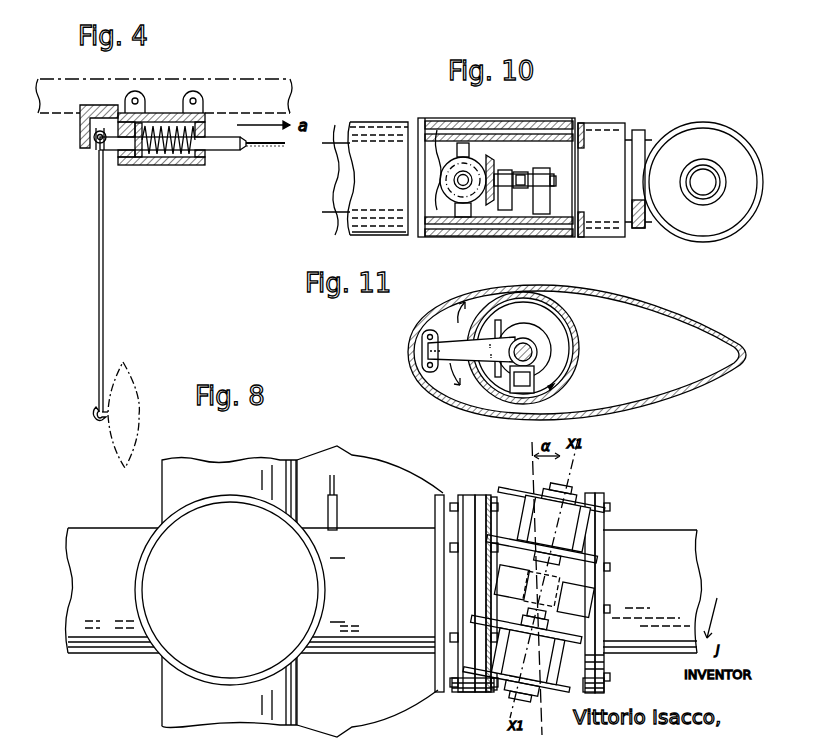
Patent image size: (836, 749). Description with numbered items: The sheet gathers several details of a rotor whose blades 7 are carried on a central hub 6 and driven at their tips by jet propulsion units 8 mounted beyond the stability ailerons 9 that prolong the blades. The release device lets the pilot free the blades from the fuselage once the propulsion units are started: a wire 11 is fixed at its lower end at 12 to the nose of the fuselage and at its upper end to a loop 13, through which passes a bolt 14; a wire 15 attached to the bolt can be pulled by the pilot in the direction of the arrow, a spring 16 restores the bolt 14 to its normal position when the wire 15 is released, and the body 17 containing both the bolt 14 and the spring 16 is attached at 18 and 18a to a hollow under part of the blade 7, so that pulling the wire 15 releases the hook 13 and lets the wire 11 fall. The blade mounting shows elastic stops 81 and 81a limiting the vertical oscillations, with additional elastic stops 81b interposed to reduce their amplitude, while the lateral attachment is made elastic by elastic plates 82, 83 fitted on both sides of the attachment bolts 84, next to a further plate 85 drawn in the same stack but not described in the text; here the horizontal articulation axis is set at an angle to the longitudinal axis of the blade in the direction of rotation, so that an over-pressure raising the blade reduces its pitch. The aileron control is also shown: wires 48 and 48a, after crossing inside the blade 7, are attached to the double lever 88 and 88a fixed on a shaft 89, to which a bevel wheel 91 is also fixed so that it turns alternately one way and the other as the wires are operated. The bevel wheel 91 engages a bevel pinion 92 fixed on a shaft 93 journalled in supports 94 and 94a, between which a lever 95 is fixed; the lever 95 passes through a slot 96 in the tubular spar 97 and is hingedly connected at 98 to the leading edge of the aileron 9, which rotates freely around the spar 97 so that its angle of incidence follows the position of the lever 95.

In FIG. 8, the central hub 6 is at (372, 486).
In FIG. 4, the blade 7 is at (62, 105).
In FIG. 10, the blade 7 is at (393, 124).
In FIG. 8, the blade 7 is at (672, 546).
In FIG. 10, the jet propulsion unit 8 is at (697, 132).
In FIG. 10, the stability aileron 9 is at (612, 135).
In FIG. 11, the stability aileron 9 is at (640, 318).
In FIG. 4, the wire 11 is at (104, 256).
In FIG. 4, the fixing point 12 is at (94, 413).
In FIG. 4, the loop 13 is at (95, 149).
In FIG. 4, the bolt 14 is at (215, 148).
In FIG. 4, the wire 15 is at (278, 149).
In FIG. 4, the spring 16 is at (160, 164).
In FIG. 4, the body 17 is at (195, 165).
In FIG. 4, the attachment point 18 is at (196, 92).
In FIG. 4, the attachment point 18a is at (140, 92).
In FIG. 10, the wire 48 is at (343, 144).
In FIG. 10, the wire 48a is at (340, 220).
In FIG. 8, the elastic stop 81 is at (575, 594).
In FIG. 8, the elastic stop 81a is at (495, 578).
In FIG. 8, the additional elastic stop 81b is at (556, 574).
In FIG. 8, the elastic plate 82 is at (480, 494).
In FIG. 8, the elastic plate 83 is at (445, 493).
In FIG. 8, the attachment bolt 84 is at (497, 501).
In FIG. 8, the plate 85 is at (462, 494).
In FIG. 10, the double lever 88 is at (468, 158).
In FIG. 10, the double lever 88a is at (462, 224).
In FIG. 10, the shaft 89 is at (455, 180).
In FIG. 10, the bevel wheel 91 is at (448, 126).
In FIG. 11, the bevel wheel 91 is at (494, 300).
In FIG. 10, the bevel pinion 92 is at (492, 163).
In FIG. 11, the bevel pinion 92 is at (542, 335).
In FIG. 10, the shaft 93 is at (608, 130).
In FIG. 11, the shaft 93 is at (538, 352).
In FIG. 10, the support 94 is at (506, 228).
In FIG. 11, the support 94 is at (540, 385).
In FIG. 10, the support 94a is at (578, 214).
In FIG. 10, the lever 95 is at (525, 172).
In FIG. 11, the lever 95 is at (452, 352).
In FIG. 11, the slot 96 is at (472, 390).
In FIG. 10, the tubular spar 97 is at (345, 175).
In FIG. 11, the tubular spar 97 is at (520, 293).
In FIG. 11, the hinge connection 98 is at (422, 337).